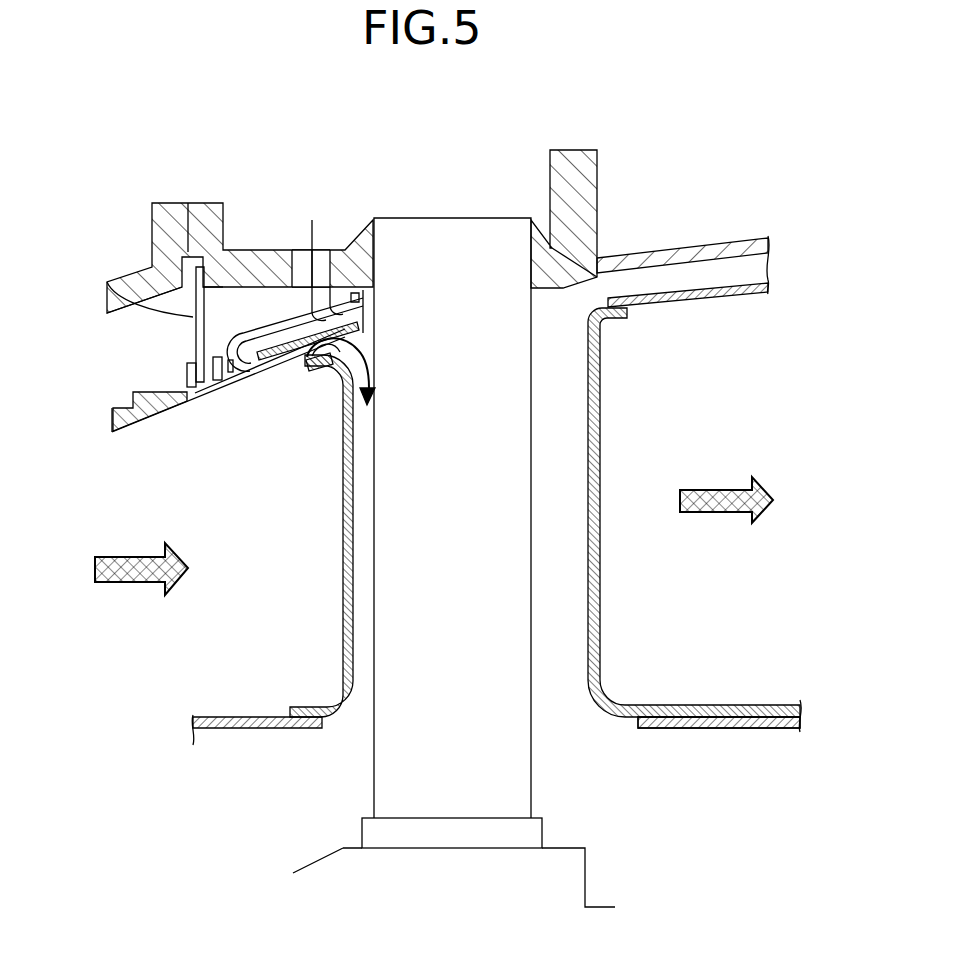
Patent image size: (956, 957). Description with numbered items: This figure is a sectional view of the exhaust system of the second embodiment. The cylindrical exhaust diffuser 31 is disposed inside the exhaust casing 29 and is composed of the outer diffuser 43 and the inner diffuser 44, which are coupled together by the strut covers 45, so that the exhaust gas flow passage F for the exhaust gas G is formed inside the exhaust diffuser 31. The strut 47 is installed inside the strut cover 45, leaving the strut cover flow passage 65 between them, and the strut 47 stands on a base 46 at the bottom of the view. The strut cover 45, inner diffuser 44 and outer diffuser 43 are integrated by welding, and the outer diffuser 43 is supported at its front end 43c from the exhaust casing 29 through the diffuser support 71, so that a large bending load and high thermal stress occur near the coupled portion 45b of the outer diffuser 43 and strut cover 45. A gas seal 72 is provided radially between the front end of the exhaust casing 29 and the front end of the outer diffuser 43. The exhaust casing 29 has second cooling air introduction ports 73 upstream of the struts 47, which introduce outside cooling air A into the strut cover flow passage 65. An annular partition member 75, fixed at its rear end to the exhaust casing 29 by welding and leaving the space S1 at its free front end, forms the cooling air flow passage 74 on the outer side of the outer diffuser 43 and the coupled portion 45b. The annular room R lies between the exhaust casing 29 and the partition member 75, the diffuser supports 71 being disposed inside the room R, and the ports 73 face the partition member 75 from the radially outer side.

The gas seal 72 is at (110, 440).
The room R is at (220, 305).
The exhaust casing 29 is at (250, 241).
The second cooling air introduction port 73 is at (300, 263).
The diffuser support 71 is at (322, 312).
The cooling air A is at (313, 237).
The space S1 is at (187, 352).
The front end 43c is at (202, 393).
The partition member 75 is at (270, 361).
The cooling air flow passage 74 is at (297, 368).
The coupled portion 45b is at (330, 362).
The exhaust gas flow passage F is at (268, 544).
The exhaust gas G is at (133, 583).
The strut cover flow passage 65 is at (370, 610).
The inner diffuser 44 is at (283, 729).
The strut 47 is at (531, 793).
The exhaust diffuser 31 is at (716, 736).
The base plate 46 is at (460, 835).
The outer diffuser 43 is at (733, 298).
The strut cover 45 is at (603, 405).